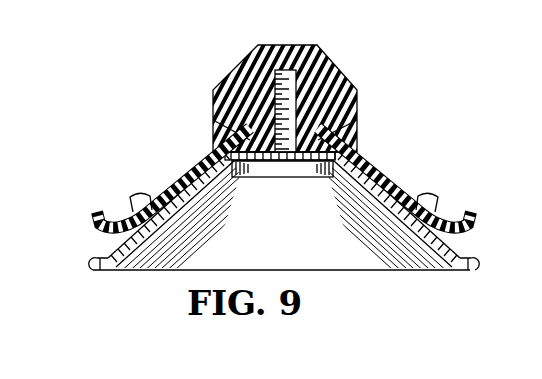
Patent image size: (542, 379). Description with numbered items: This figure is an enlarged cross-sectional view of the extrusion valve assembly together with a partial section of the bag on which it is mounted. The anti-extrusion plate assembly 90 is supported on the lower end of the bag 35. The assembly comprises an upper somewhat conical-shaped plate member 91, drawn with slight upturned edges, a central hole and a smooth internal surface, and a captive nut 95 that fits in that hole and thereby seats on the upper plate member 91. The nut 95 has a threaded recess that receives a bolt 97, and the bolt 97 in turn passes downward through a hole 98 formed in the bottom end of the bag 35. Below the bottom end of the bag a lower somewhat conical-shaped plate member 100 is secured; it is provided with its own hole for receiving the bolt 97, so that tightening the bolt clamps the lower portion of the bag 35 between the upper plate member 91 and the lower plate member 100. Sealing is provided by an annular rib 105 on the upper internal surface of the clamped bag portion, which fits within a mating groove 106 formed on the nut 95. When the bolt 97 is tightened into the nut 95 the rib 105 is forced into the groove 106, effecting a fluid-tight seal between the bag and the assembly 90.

The anti-extrusion plate assembly 90 is at (406, 146).
The upper somewhat conical-shaped plate member 91 is at (181, 158).
The bag 35 is at (373, 180).
The captive nut 95 is at (317, 46).
The bolt 97 is at (308, 168).
The hole 98 is at (280, 153).
The lower somewhat conical-shaped plate member 100 is at (92, 262).
The annular rib 105 is at (333, 130).
The groove 106 is at (244, 128).